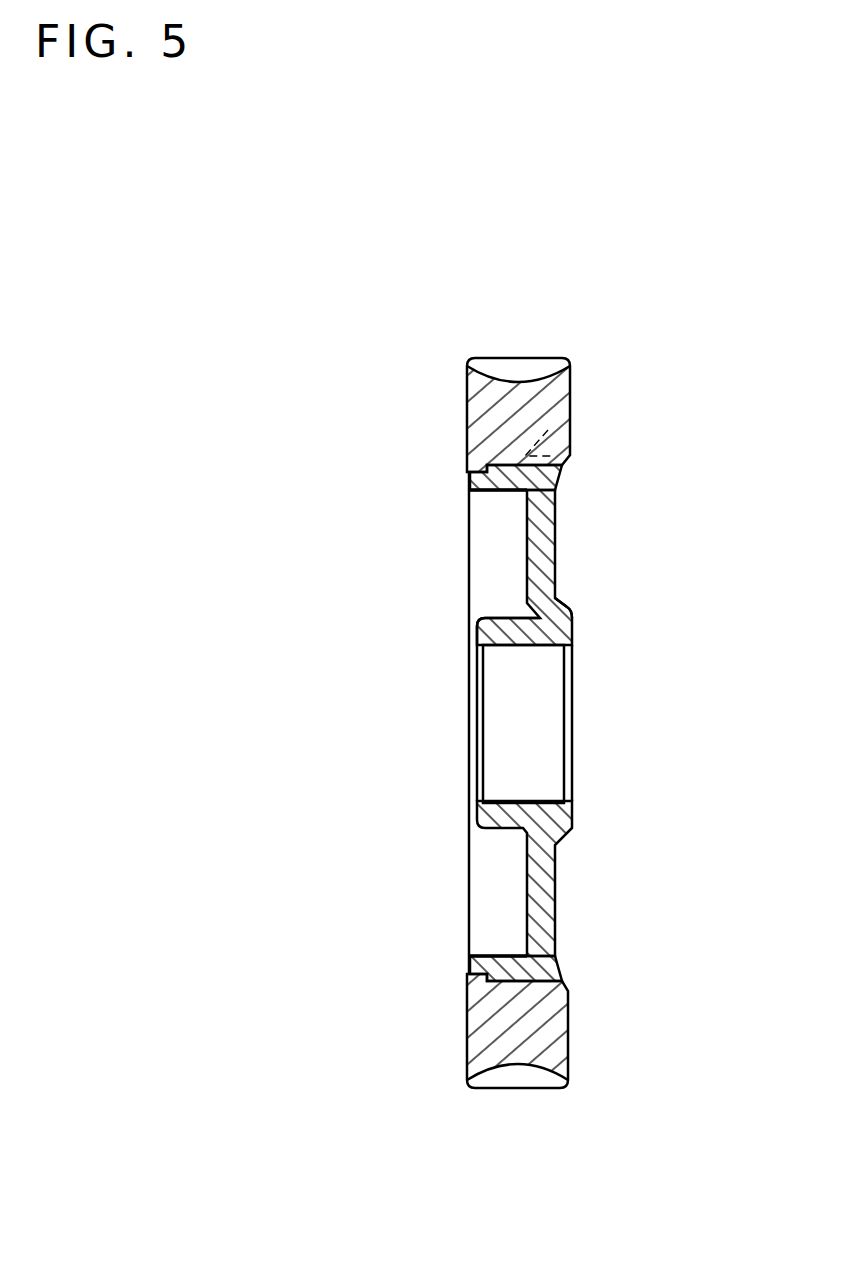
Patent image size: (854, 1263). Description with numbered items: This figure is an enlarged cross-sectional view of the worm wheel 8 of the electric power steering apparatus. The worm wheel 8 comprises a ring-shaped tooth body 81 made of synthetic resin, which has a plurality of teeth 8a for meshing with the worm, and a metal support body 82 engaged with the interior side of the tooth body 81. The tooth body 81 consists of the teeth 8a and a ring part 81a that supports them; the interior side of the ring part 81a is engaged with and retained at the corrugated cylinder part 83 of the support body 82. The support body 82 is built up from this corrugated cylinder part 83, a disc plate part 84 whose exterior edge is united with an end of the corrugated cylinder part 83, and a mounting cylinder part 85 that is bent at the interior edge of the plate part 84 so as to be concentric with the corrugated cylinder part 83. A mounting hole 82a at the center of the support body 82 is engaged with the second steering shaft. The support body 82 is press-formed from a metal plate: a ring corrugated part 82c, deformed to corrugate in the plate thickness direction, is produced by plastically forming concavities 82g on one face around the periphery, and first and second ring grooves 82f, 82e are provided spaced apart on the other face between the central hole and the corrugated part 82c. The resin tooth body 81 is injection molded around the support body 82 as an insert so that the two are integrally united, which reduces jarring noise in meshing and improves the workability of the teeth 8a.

The worm wheel 8 is at (569, 354).
The teeth 8a is at (493, 358).
The tooth body 81 is at (566, 385).
The ring part 81a is at (495, 432).
The support body 82 is at (566, 569).
The mounting hole 82a is at (545, 648).
The ring corrugated part 82c is at (548, 430).
The second ring groove 82e is at (572, 607).
The first ring groove 82f is at (558, 489).
The concavities 82g is at (560, 466).
The corrugated cylinder part 83 is at (487, 494).
The disc plate part 84 is at (557, 530).
The mounting cylinder part 85 is at (485, 632).